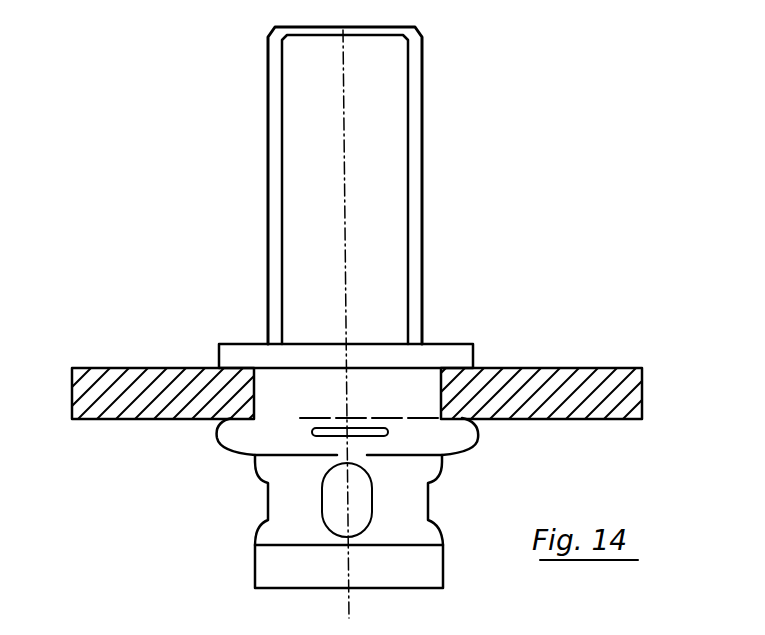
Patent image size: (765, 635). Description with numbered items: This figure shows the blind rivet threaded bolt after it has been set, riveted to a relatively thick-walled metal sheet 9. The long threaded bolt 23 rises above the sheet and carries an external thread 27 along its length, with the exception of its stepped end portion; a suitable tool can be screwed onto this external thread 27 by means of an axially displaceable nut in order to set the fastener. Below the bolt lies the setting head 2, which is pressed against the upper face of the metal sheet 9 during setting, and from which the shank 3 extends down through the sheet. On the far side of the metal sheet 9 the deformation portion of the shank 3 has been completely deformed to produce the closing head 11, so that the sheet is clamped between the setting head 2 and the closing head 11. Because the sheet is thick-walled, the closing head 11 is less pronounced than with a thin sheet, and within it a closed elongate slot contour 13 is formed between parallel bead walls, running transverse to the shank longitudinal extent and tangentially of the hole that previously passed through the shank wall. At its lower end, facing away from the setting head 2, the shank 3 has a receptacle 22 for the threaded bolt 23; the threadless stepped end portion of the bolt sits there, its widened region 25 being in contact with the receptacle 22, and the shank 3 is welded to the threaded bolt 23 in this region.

The threaded bolt 23 is at (448, 128).
The external thread 27 is at (419, 186).
The setting head 2 is at (248, 355).
The shank 3 is at (272, 388).
The metal sheet 9 is at (138, 388).
The closing head 11 is at (237, 438).
The slot contour 13 is at (477, 438).
The receptacle 22 is at (267, 498).
The widened region 25 is at (275, 565).